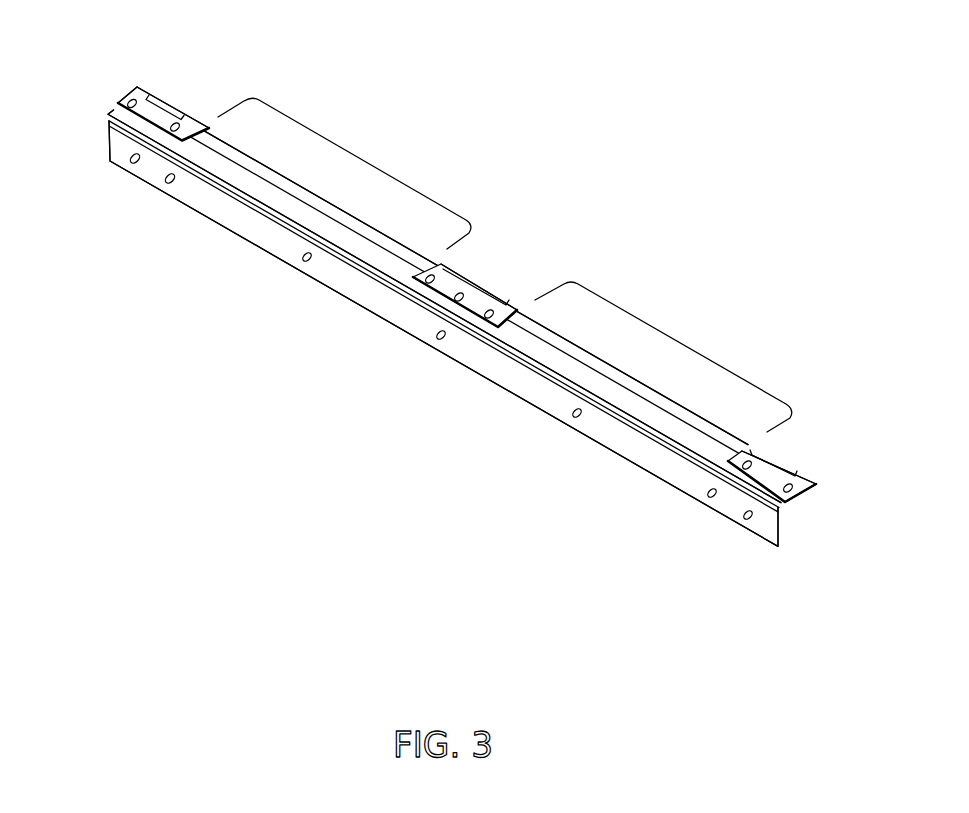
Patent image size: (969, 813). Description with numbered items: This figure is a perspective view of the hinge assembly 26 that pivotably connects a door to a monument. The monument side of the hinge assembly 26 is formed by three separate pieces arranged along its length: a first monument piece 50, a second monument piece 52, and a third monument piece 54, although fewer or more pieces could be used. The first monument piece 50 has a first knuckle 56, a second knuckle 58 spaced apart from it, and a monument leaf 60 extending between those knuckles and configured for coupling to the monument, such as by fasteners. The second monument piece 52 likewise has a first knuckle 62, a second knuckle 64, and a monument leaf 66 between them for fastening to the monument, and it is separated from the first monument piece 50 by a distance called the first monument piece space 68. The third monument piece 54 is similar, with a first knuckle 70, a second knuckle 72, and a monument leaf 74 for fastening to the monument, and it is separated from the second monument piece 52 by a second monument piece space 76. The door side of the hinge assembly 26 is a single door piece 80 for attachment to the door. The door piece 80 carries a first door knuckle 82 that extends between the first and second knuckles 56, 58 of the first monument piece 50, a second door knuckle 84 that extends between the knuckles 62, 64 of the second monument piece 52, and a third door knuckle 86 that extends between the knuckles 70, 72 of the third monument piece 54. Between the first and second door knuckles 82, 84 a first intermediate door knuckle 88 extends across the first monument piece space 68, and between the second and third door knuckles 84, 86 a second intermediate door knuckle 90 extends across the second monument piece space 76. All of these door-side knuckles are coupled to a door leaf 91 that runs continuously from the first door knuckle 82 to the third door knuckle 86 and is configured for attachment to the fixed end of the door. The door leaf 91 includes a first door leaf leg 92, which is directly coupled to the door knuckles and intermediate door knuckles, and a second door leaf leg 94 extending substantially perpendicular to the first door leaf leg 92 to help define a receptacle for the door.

The hinge assembly 26 is at (522, 92).
The first monument piece 50 is at (806, 495).
The second monument piece 52 is at (433, 297).
The third monument piece 54 is at (117, 96).
The first knuckle 56 is at (817, 478).
The second knuckle 58 is at (762, 453).
The monument leaf 60 is at (765, 480).
The first knuckle 62 is at (517, 307).
The second knuckle 64 is at (455, 247).
The monument leaf 66 is at (477, 307).
The first monument piece space 68 is at (678, 339).
The first knuckle 70 is at (193, 118).
The second knuckle 72 is at (143, 98).
The monument leaf 74 is at (145, 113).
The second monument piece space 76 is at (364, 158).
The door piece 80 is at (235, 233).
The first door knuckle 82 is at (801, 480).
The second door knuckle 84 is at (473, 282).
The third door knuckle 86 is at (172, 102).
The first intermediate door knuckle 88 is at (637, 387).
The second intermediate door knuckle 90 is at (362, 230).
The door leaf 91 is at (197, 175).
The first door leaf leg 92 is at (303, 218).
The second door leaf leg 94 is at (527, 385).